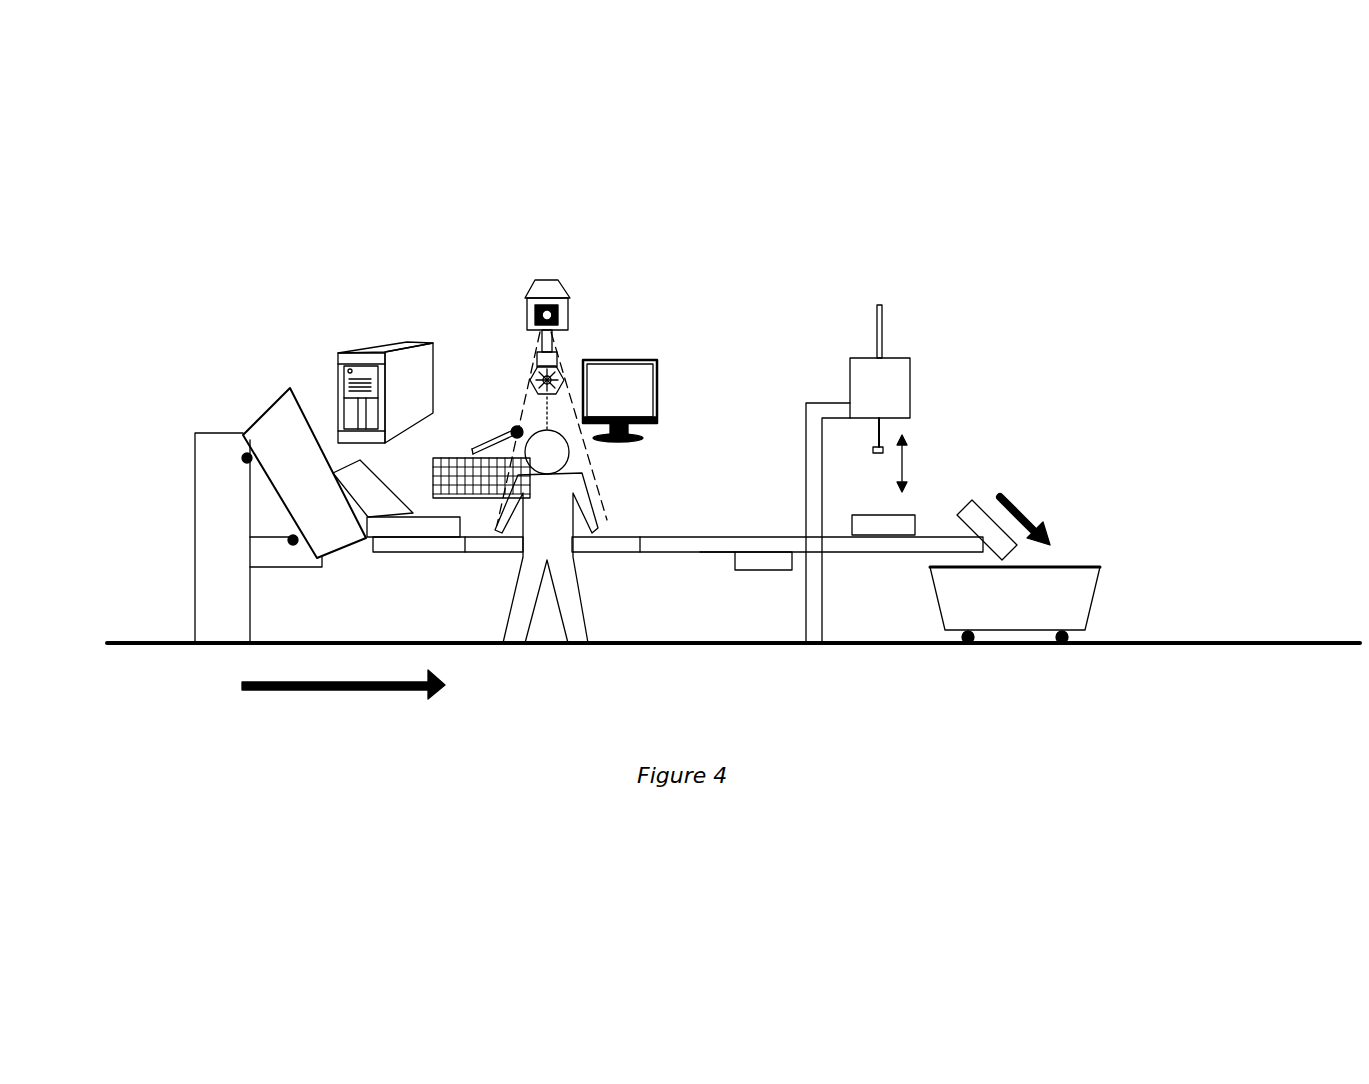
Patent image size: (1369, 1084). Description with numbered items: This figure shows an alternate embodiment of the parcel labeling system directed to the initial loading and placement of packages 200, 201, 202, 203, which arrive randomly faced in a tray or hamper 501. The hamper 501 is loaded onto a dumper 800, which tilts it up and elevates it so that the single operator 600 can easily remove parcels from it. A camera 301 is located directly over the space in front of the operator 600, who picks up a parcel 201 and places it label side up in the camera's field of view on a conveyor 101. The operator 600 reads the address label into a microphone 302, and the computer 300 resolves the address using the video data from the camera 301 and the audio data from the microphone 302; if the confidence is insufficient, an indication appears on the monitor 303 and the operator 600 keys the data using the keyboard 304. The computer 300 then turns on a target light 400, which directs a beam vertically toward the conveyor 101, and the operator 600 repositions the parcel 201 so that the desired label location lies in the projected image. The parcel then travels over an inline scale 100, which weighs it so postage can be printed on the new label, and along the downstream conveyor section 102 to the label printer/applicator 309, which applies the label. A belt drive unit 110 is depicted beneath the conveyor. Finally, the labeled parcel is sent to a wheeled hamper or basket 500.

The inline scale 100 is at (397, 545).
The conveyor 101 is at (636, 527).
The downstream conveyor section 102 is at (720, 553).
The belt drive unit 110 is at (763, 560).
The package 200 is at (373, 497).
The parcel 201 is at (600, 497).
The package 202 is at (907, 515).
The package 203 is at (983, 503).
The computer 300 is at (370, 343).
The camera 301 is at (567, 295).
The microphone 302 is at (500, 433).
The monitor 303 is at (657, 393).
The keyboard 304 is at (443, 453).
The label printer/applicator 309 is at (898, 348).
The light 400 is at (533, 375).
The wheeled hamper 500 is at (1070, 563).
The hamper 501 is at (257, 420).
The operator 600 is at (515, 583).
The dumper 800 is at (193, 522).